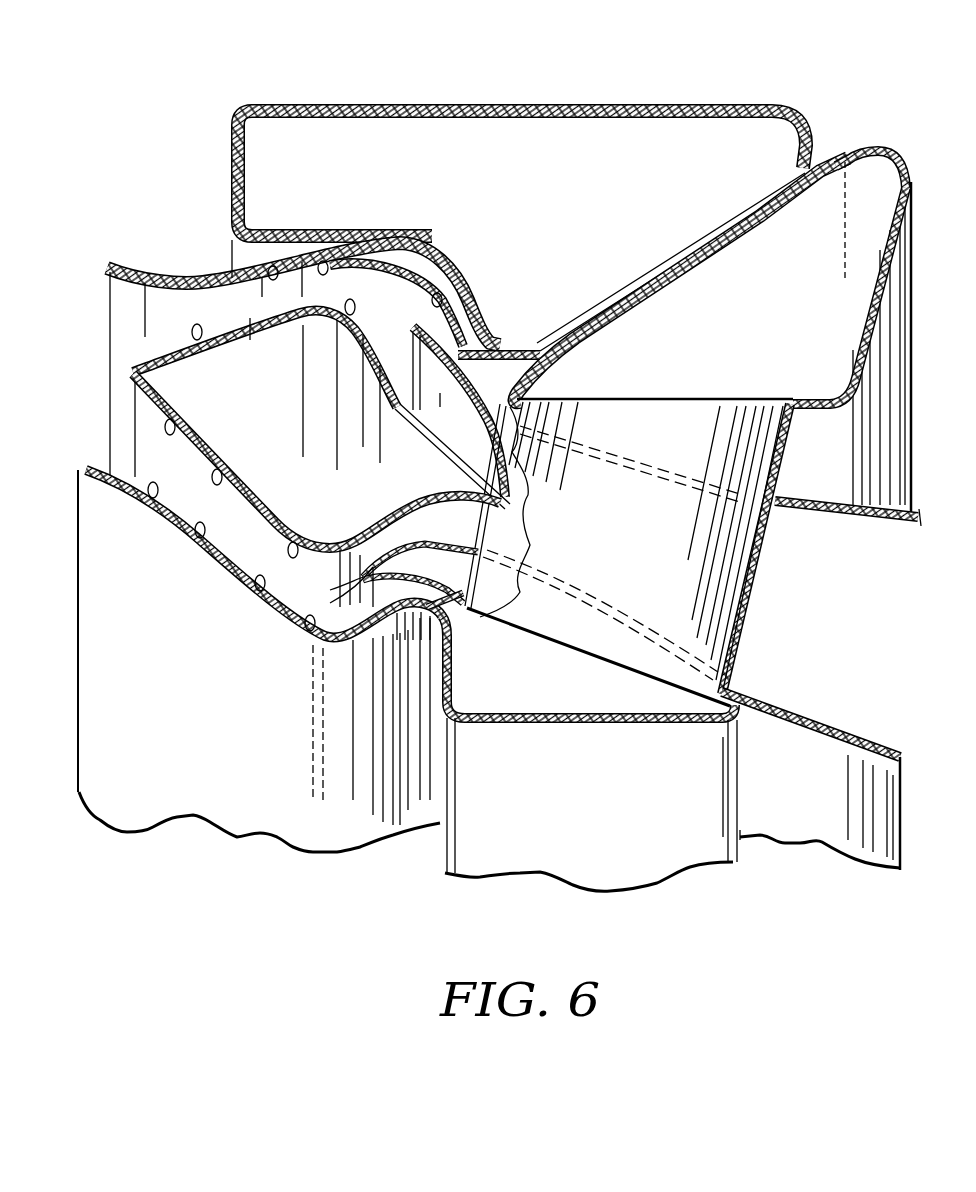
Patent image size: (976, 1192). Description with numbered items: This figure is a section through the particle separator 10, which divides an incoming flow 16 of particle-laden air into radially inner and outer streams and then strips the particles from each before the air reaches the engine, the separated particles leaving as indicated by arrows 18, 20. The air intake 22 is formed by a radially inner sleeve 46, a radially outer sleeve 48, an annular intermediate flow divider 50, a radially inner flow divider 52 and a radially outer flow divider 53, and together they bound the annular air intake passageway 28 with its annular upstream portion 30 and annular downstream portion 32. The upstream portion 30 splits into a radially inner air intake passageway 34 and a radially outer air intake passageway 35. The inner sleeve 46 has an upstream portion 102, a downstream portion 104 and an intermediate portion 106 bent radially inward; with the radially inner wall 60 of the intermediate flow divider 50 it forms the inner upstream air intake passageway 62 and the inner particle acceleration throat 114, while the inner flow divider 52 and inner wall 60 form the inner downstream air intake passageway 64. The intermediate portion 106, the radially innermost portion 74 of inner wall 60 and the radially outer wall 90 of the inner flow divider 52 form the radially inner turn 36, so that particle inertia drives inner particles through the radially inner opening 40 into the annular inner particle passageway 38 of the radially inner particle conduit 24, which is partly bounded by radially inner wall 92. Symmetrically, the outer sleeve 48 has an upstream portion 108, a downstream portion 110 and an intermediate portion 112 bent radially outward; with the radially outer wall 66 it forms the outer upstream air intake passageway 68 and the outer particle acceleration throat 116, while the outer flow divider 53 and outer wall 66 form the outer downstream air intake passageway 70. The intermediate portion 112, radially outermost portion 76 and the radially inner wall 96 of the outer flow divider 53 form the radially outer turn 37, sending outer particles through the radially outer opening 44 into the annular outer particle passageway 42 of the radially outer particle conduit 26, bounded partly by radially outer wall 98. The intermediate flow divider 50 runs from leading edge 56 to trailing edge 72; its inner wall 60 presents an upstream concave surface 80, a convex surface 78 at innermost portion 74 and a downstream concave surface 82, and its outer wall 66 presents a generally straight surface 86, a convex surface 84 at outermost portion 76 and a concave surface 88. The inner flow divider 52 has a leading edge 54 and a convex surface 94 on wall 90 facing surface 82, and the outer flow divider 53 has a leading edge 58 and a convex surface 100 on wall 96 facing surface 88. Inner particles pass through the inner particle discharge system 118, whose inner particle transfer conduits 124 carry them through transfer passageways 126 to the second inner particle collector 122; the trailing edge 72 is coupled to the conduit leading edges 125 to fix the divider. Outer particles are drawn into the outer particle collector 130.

The particle separator 10 is at (217, 98).
The outer particle collector 130 is at (513, 107).
The second inner particle collector 122 is at (856, 148).
The transfer passageway 126 is at (775, 427).
The inner particle transfer conduit 124 is at (790, 446).
The inner particle discharge system 118 is at (770, 552).
The radially outer flow divider 53 is at (425, 370).
The annular air intake passageway 28 is at (774, 691).
The annular downstream portion 32 is at (812, 720).
The radially inner flow divider 52 is at (790, 737).
The radially inner particle conduit 24 is at (591, 753).
The inner particle acceleration throat 114 is at (260, 583).
The upstream portion 102 is at (95, 470).
The annular upstream portion 30 is at (160, 503).
The radially inner sleeve 46 is at (167, 532).
The radially inner air intake passageway 34 is at (207, 540).
The radially inner opening 40 is at (313, 593).
The radially inner turn 36 is at (313, 633).
The intermediate portion 106 is at (340, 640).
The upstream portion 108 is at (128, 262).
The air intake 22 is at (163, 258).
The radially outer sleeve 48 is at (203, 264).
The outer particle acceleration throat 116 is at (283, 270).
The radially outer turn 37 is at (338, 252).
The intermediate portion 112 is at (377, 253).
The annular outer particle passageway 42 is at (445, 300).
The radially outer opening 44 is at (430, 277).
The downstream portion 110 is at (490, 333).
The radially outer particle conduit 26 is at (475, 364).
The radially outer wall 98 is at (550, 360).
The arrow 20 is at (513, 348).
The leading edge 58 is at (426, 310).
The arrow 18 is at (671, 375).
The leading edge 125 is at (560, 467).
The trailing edge 72 is at (527, 522).
The convex surface 100 is at (496, 392).
The radially inner wall 96 is at (486, 426).
The generally straight surface 86 is at (265, 359).
The radially inner wall 60 is at (254, 489).
The annular intermediate flow divider 50 is at (235, 350).
The outer upstream air intake passageway 68 is at (218, 363).
The radially outer wall 66 is at (278, 425).
The upstream concave surface 80 is at (180, 432).
The radially outermost portion 76 is at (330, 340).
The convex surface 84 is at (345, 340).
The concave surface 88 is at (393, 405).
The inner upstream air intake passageway 62 is at (222, 477).
The convex surface 78 is at (300, 540).
The radially innermost portion 74 is at (307, 540).
The outer downstream air intake passageway 70 is at (447, 460).
The downstream concave surface 82 is at (383, 513).
The inner downstream air intake passageway 64 is at (447, 500).
The convex surface 94 is at (437, 543).
The leading edge 54 is at (401, 578).
The radially outer wall 90 is at (459, 558).
The radially inner wall 92 is at (487, 607).
The downstream portion 104 is at (473, 630).
The annular inner particle passageway 38 is at (473, 610).
The leading edge 56 is at (138, 366).
The flow of air 16 is at (138, 348).
The radially outer air intake passageway 35 is at (242, 287).